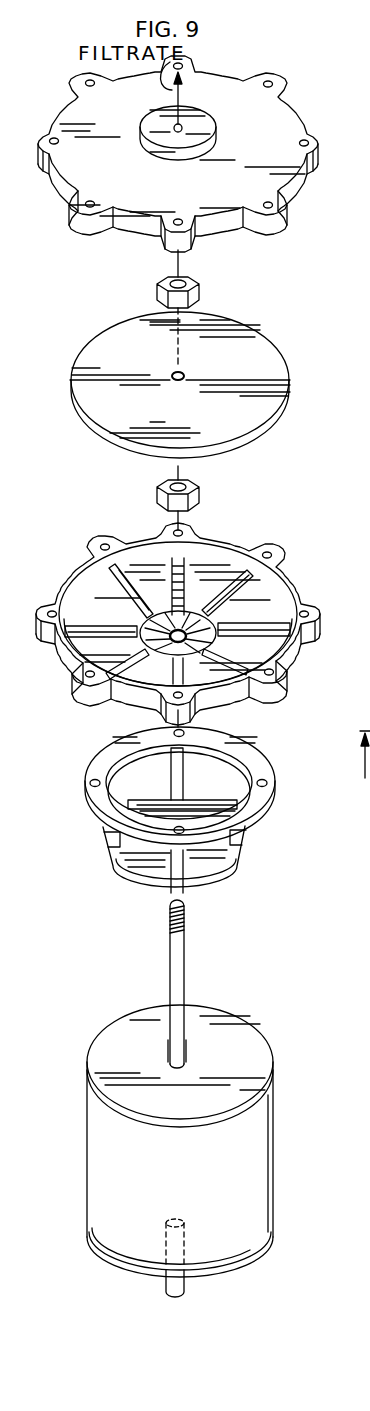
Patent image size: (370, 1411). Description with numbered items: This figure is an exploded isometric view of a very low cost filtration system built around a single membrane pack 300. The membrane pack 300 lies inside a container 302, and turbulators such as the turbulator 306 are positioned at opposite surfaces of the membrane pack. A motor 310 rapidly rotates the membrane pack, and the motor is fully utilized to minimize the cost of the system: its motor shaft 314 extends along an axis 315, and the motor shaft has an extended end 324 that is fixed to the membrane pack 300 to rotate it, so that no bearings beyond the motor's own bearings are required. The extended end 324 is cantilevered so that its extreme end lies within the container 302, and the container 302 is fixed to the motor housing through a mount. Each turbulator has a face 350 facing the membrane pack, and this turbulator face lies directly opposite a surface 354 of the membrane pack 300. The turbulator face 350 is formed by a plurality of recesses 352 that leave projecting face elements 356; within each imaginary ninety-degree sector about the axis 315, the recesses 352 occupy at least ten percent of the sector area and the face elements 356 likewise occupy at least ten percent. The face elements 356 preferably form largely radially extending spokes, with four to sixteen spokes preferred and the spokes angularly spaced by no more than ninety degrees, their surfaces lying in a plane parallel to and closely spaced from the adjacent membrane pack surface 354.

The container 302 is at (218, 65).
The axis 315 is at (187, 262).
The membrane pack 300 is at (70, 355).
The membrane pack surface 354 is at (144, 335).
The turbulator face 350 is at (238, 577).
The turbulator 306 is at (100, 600).
The recesses 352 is at (197, 565).
The face elements 356 is at (263, 620).
The motor shaft extended end 324 is at (110, 838).
The motor 310 is at (203, 1151).
The motor shaft 314 is at (185, 1037).